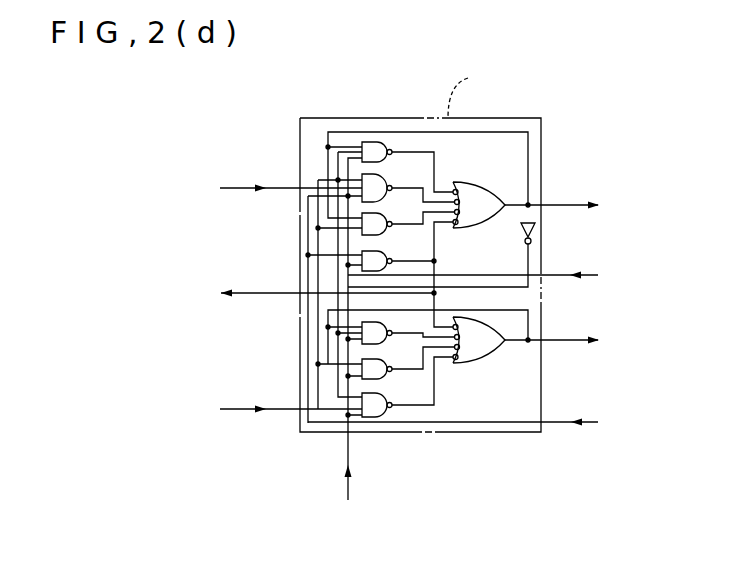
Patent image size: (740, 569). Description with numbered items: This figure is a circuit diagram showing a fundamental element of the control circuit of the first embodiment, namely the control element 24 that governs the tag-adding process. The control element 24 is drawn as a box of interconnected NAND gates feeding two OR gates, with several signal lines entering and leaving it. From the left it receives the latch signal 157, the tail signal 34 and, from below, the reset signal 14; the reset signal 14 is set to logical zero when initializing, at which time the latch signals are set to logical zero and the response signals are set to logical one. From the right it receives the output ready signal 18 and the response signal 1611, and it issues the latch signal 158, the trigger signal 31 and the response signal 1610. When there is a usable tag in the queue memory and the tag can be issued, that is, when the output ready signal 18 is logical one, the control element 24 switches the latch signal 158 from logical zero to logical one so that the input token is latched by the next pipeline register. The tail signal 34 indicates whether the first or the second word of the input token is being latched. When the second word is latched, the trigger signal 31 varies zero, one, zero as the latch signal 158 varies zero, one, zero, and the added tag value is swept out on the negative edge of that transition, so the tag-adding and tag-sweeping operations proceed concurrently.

The control element 24 is at (366, 118).
The reset signal 14 is at (349, 485).
The latch signal 157 is at (238, 186).
The response signal 1610 is at (250, 291).
The tail signal 34 is at (241, 407).
The latch signal 158 is at (574, 203).
The response signal 1611 is at (587, 273).
The trigger signal 31 is at (582, 338).
The output ready signal 18 is at (585, 420).